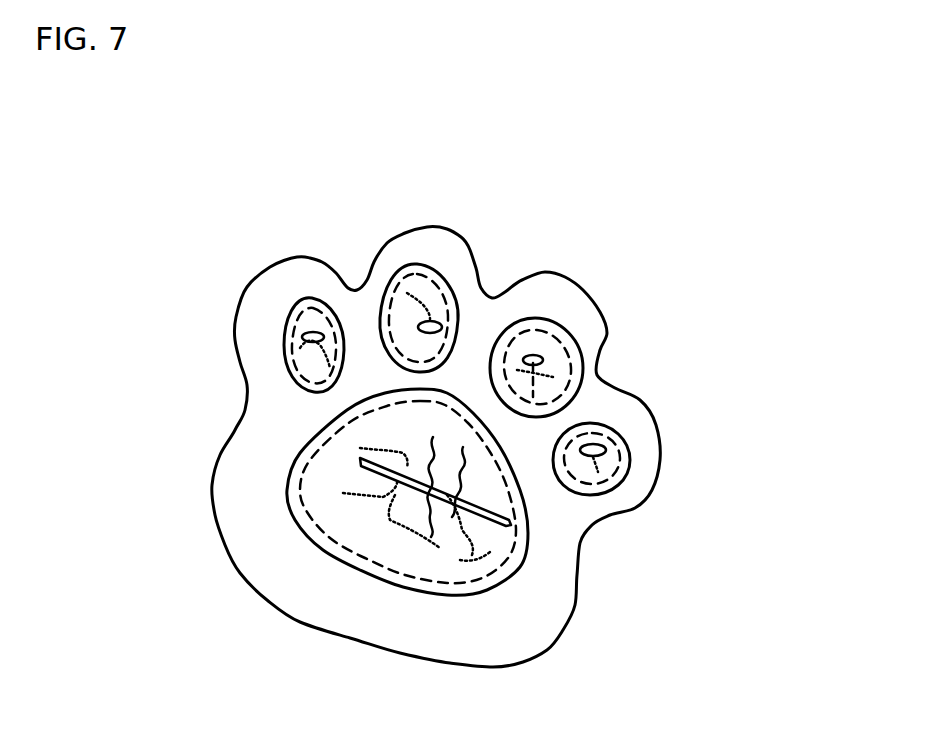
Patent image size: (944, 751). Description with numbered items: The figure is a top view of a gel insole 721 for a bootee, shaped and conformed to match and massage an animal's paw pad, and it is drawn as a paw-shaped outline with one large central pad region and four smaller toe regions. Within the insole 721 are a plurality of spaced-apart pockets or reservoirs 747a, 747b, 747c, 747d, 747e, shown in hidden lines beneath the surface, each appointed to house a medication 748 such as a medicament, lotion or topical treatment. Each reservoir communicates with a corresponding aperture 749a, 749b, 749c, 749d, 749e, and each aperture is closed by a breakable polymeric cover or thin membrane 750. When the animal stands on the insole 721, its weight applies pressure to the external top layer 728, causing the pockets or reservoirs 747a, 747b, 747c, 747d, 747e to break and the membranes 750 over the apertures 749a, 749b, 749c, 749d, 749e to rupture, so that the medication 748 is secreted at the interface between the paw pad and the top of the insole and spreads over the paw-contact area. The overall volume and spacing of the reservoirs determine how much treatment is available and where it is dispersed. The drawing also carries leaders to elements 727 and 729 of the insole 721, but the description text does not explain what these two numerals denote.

The gel insole 721 is at (297, 262).
The inner frame 727 is at (258, 425).
The external top layer 728 is at (330, 563).
The outer skin layer 729 is at (233, 563).
The insole pocket/reservoir 747a is at (527, 550).
The insole pocket/reservoir 747b is at (313, 310).
The insole pocket/reservoir 747c is at (437, 300).
The insole pocket/reservoir 747d is at (547, 317).
The insole pocket/reservoir 747e is at (615, 428).
The medication 748 is at (407, 330).
The aperture 749a is at (403, 483).
The aperture 749b is at (283, 355).
The aperture 749c is at (455, 320).
The aperture 749d is at (575, 378).
The aperture 749e is at (615, 462).
The breakable polymeric cover or thin membrane 750 is at (480, 513).